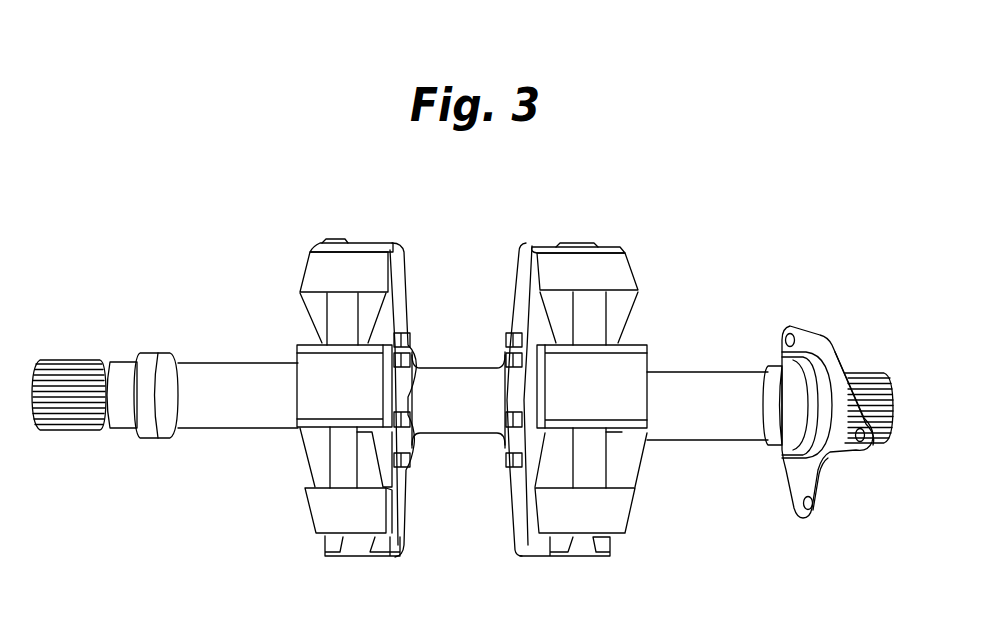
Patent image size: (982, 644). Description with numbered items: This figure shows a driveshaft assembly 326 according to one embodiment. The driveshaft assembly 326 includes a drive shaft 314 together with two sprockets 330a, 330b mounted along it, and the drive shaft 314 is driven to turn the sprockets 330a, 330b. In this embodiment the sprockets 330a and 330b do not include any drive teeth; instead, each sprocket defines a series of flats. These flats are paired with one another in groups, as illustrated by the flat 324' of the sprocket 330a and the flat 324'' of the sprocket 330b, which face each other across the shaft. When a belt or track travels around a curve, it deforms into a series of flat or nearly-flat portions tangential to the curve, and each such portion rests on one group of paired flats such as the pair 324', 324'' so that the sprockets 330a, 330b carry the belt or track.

The driveshaft assembly 326 is at (708, 178).
The drive shaft 314 is at (78, 360).
The flat 324' is at (318, 400).
The flat 324'' is at (619, 401).
The sprocket 330a is at (372, 243).
The sprocket 330b is at (567, 243).